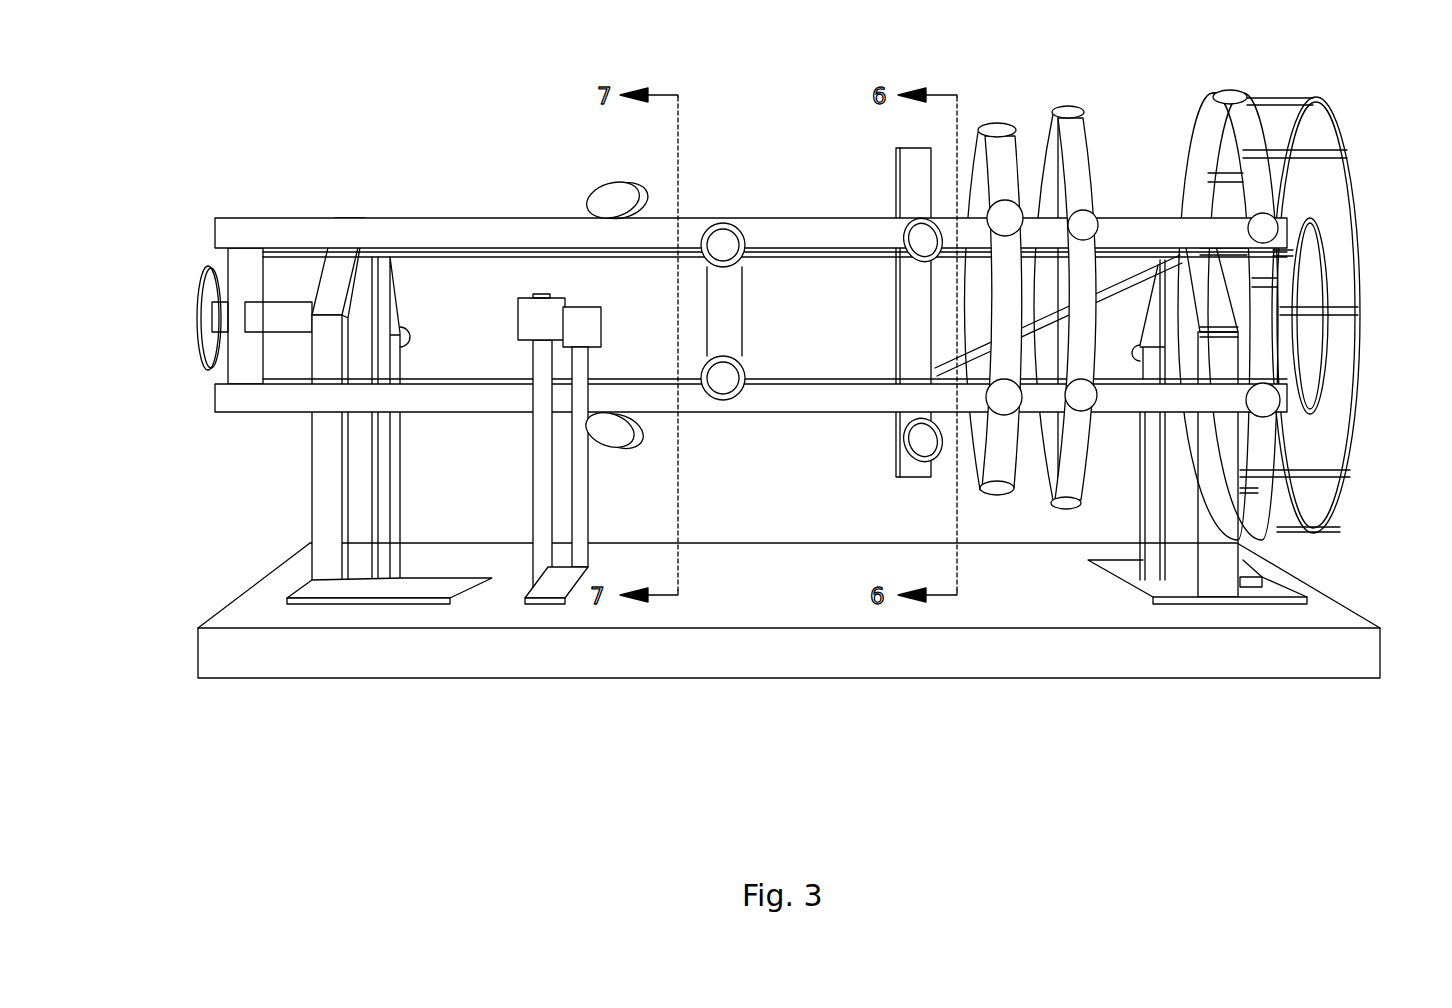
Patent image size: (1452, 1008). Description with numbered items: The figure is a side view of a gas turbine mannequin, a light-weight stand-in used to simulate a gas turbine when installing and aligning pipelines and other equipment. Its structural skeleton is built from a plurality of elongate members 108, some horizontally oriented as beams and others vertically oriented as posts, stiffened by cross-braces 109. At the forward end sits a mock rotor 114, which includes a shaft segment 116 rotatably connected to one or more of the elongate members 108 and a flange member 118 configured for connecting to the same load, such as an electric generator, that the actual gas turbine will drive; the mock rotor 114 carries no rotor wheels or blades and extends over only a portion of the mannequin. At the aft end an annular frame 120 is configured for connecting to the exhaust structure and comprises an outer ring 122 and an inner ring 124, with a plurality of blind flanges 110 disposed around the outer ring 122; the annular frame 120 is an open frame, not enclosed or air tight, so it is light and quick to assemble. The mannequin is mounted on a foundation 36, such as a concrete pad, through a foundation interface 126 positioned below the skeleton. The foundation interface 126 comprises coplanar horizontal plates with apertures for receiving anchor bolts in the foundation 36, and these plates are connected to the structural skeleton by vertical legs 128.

The foundation 36 is at (1335, 655).
The elongate members 108 is at (418, 235).
The cross-braces 109 is at (1160, 250).
The blind flanges 110 is at (608, 193).
The mock rotor 114 is at (178, 272).
The shaft segment 116 is at (280, 327).
The flange member 118 is at (205, 357).
The annular frame 120 is at (1315, 280).
The outer ring 122 is at (1352, 180).
The inner ring 124 is at (1325, 240).
The foundation interface 126 is at (443, 583).
The vertical legs 128 is at (390, 510).